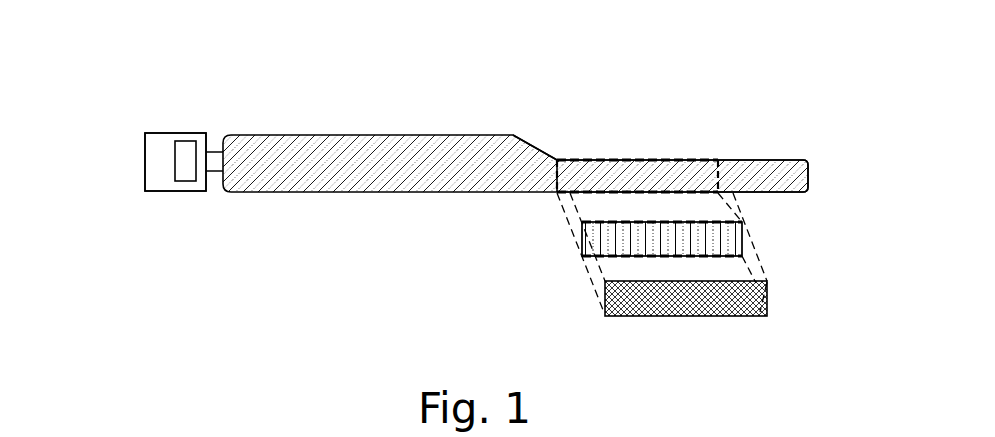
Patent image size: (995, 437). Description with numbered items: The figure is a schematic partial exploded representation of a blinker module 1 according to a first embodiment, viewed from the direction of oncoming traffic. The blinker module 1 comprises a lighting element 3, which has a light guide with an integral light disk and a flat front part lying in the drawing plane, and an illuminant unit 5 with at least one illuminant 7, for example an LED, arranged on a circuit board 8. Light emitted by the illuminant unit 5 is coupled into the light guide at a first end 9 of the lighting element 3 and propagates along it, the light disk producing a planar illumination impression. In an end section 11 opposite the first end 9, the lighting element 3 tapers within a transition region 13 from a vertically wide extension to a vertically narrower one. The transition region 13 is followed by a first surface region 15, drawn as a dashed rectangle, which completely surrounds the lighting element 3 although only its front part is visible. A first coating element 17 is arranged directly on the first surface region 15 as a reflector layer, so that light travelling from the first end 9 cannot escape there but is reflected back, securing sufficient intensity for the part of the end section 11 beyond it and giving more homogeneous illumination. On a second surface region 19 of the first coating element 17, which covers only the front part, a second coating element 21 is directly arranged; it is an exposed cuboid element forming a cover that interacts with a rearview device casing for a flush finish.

The blinker module 1 is at (182, 83).
The lighting element 3 is at (278, 83).
The illuminant unit 5 is at (147, 218).
The illuminant 7 is at (188, 168).
The circuit board 8 is at (152, 152).
The first end 9 is at (203, 213).
The end section 11 is at (767, 108).
The transition region 13 is at (558, 108).
The first surface region 15 is at (657, 162).
The first coating element 17 is at (722, 237).
The second surface region 19 is at (610, 222).
The second coating element 21 is at (700, 317).